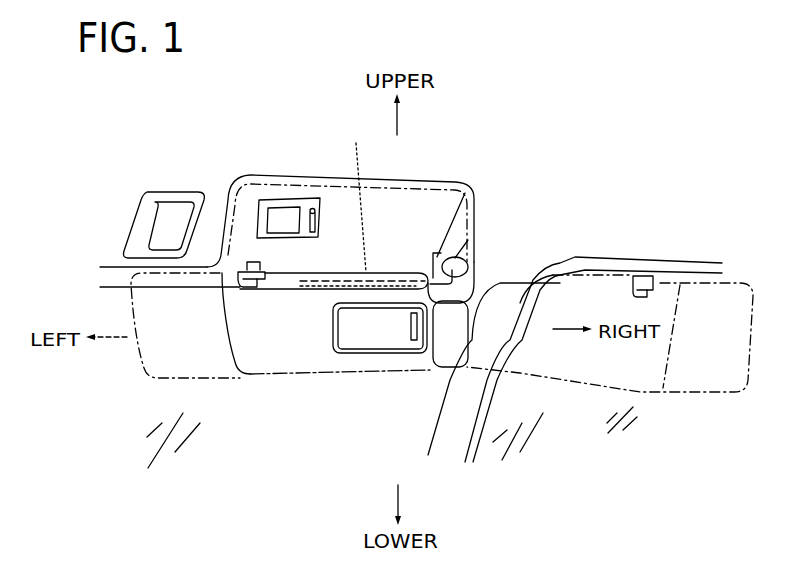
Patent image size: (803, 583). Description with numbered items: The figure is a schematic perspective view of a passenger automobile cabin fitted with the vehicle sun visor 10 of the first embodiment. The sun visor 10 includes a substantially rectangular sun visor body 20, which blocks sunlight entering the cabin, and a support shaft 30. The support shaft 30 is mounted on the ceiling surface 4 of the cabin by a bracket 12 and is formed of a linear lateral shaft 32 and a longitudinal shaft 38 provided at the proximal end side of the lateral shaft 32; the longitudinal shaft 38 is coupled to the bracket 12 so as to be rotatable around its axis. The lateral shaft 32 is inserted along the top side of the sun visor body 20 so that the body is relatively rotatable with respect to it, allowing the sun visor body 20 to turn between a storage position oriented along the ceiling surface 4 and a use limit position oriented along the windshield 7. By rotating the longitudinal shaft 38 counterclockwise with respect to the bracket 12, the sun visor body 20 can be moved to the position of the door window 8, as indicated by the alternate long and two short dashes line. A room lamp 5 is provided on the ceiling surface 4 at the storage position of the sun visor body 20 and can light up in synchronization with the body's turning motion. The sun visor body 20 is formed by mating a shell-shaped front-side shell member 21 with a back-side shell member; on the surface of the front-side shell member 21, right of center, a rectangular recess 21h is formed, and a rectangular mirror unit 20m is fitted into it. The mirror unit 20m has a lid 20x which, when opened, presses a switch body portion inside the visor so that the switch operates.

The ceiling surface 4 is at (404, 210).
The room lamp 5 is at (280, 213).
The windshield 7 is at (207, 402).
The window 8 is at (557, 422).
The vehicle sun visor 10 is at (214, 340).
The bracket 12 is at (473, 270).
The sun visor body 20 is at (301, 350).
The mirror unit 20m is at (376, 342).
The lid 20x is at (394, 340).
The front-side shell member 21 is at (270, 356).
The rectangular recess 21h is at (360, 338).
The support shaft 30 is at (437, 252).
The lateral shaft 32 is at (356, 196).
The longitudinal shaft 38 is at (483, 273).